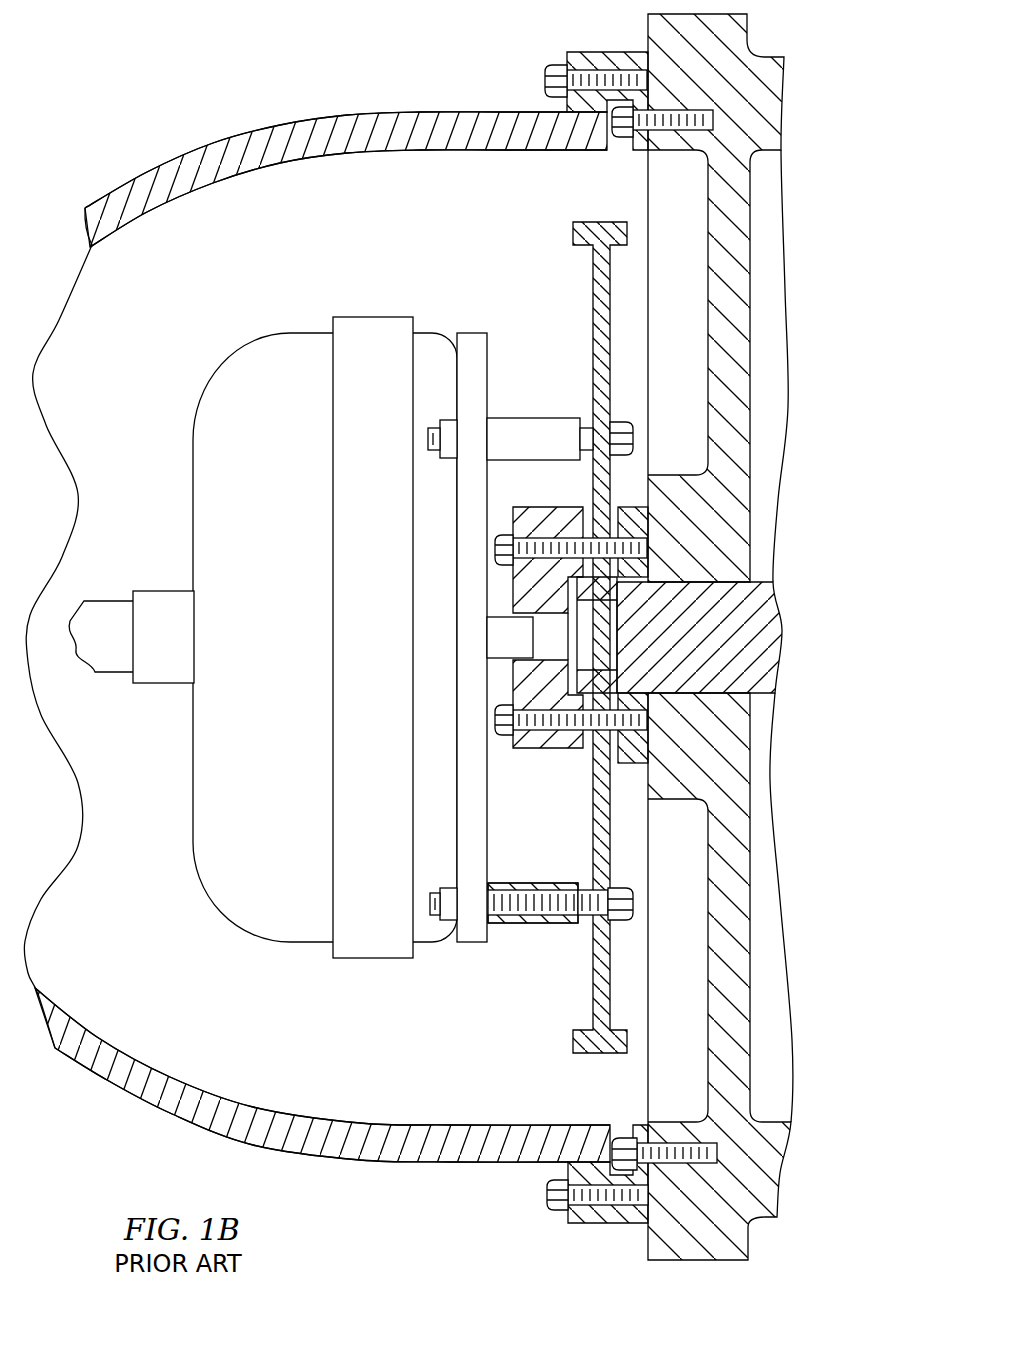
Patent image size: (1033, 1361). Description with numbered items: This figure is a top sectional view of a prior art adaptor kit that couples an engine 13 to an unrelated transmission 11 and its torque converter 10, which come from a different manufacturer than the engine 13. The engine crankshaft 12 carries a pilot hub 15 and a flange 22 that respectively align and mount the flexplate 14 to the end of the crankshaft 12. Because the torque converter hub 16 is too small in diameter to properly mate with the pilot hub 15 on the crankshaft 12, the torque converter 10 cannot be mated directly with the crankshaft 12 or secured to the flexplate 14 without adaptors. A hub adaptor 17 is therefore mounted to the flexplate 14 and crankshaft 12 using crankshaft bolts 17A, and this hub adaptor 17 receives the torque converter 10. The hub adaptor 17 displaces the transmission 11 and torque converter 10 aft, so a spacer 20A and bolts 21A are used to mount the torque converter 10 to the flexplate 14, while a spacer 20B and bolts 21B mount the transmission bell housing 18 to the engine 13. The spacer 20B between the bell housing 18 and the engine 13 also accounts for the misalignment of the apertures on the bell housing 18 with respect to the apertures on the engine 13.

The torque converter 10 is at (194, 383).
The transmission 11 is at (118, 172).
The engine crankshaft 12 is at (740, 635).
The engine 13 is at (750, 295).
The flexplate 14 is at (573, 280).
The pilot hub 15 is at (597, 678).
The torque converter hub 16 is at (510, 640).
The hub adaptor 17 is at (553, 750).
The crankshaft bolts 17A is at (632, 552).
The transmission bell housing 18 is at (235, 138).
The spacer 20A is at (510, 417).
The spacer 20B is at (628, 50).
The bolts 21A is at (634, 436).
The bolts 21B is at (543, 80).
The flange 22 is at (632, 518).